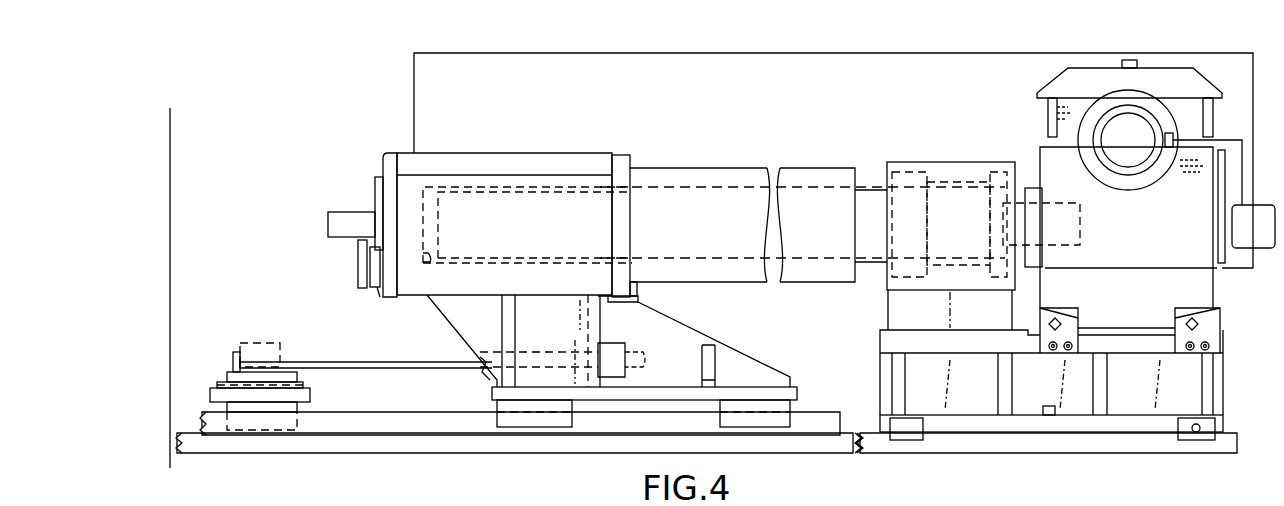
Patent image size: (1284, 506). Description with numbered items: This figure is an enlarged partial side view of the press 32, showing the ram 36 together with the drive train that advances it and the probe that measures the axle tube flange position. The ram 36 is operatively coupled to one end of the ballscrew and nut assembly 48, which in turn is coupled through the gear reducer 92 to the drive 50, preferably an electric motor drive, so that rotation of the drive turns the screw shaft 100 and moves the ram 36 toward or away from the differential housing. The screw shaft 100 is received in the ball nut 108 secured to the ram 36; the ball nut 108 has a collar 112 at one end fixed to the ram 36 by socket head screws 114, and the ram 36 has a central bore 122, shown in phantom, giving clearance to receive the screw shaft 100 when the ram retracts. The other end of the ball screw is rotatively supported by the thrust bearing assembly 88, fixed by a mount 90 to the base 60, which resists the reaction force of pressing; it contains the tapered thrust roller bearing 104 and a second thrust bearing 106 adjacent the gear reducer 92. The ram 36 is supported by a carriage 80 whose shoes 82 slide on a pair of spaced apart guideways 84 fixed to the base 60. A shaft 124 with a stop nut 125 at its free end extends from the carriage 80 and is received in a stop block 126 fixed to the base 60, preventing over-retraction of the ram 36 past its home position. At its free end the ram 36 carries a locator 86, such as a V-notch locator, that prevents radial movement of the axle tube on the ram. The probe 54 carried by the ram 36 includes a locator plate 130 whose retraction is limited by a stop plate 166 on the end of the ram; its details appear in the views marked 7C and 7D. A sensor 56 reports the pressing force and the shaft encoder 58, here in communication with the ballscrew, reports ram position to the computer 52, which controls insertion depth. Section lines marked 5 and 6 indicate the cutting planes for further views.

The section line 5- 5 is at (168, 113).
The section line 6- 6 is at (583, 181).
The detail view 7C is at (286, 494).
The detail view 7D is at (303, 499).
The press 32 is at (378, 92).
The ram 36 is at (578, 149).
The ballscrew and nut assembly 48 is at (702, 158).
The drive 50 is at (1140, 157).
The computer 52 is at (1265, 238).
The probe 54 is at (360, 302).
The sensor 56 is at (1170, 133).
The shaft encoder 58 is at (1033, 272).
The base 60 is at (1233, 437).
The carriage 80 is at (693, 342).
The shoes 82 is at (786, 417).
The guideways 84 is at (453, 420).
The locator 86 is at (343, 214).
The thrust bearing assembly 88 is at (955, 158).
The mount 90 is at (1226, 375).
The gear reducer 92 is at (1158, 229).
The screw shaft 100 is at (822, 265).
The tapered thrust roller bearing 104 is at (898, 166).
The second thrust bearing 106 is at (997, 168).
The ball nut 108 is at (803, 170).
The collar 112 is at (626, 157).
The socket head screws 114 is at (638, 293).
The central bore 122 is at (423, 253).
The shaft 124 is at (435, 364).
The stop nut 125 is at (233, 356).
The stop block 126 is at (254, 342).
The locator plate 130 is at (356, 262).
The stop plate 166 is at (376, 290).